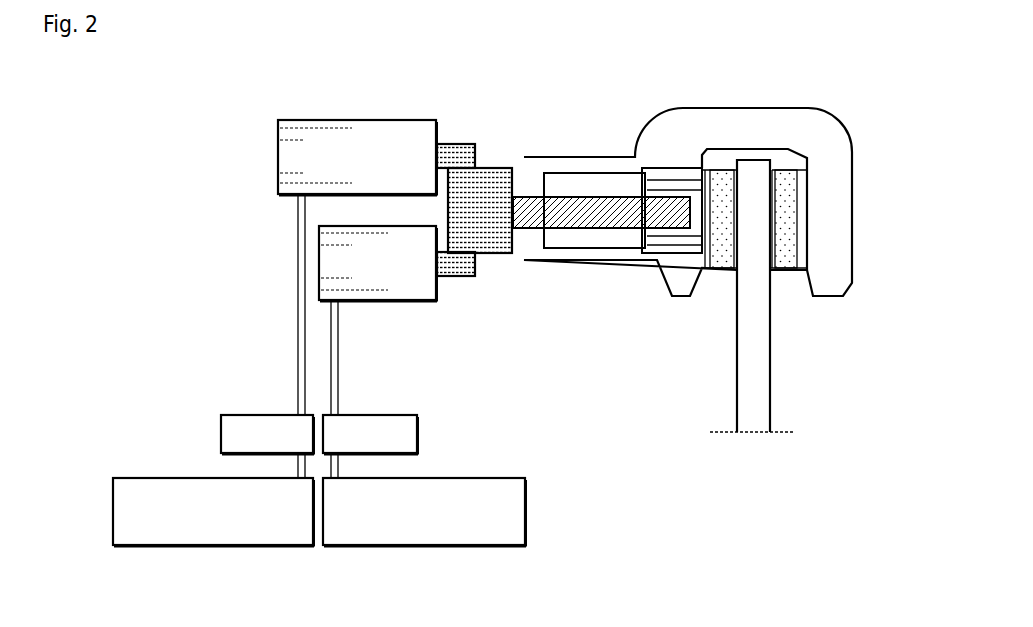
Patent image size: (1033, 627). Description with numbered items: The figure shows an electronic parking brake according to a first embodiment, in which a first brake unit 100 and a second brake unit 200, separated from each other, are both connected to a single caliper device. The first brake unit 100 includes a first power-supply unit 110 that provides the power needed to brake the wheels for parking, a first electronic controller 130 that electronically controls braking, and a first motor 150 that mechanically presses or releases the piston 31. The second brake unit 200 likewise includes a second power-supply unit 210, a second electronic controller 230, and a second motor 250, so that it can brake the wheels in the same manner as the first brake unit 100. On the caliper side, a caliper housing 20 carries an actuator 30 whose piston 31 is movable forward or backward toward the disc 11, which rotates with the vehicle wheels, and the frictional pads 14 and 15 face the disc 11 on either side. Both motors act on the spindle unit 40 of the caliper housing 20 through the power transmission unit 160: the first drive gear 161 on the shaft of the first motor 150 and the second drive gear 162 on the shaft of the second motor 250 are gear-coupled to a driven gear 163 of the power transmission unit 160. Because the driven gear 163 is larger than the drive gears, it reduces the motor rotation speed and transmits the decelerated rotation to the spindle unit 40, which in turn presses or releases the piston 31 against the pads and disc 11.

The disc 11 is at (770, 353).
The frictional pad 14 is at (787, 269).
The frictional pad 15 is at (715, 269).
The caliper housing 20 is at (773, 110).
The actuator 30 is at (678, 160).
The piston 31 is at (688, 190).
The spindle unit 40 is at (568, 197).
The first brake unit 100 is at (246, 339).
The first power-supply unit 110 is at (313, 558).
The first electronic controller 130 is at (221, 431).
The first motor 150 is at (340, 118).
The power transmission unit 160 is at (482, 203).
The first drive gear 161 is at (457, 143).
The second drive gear 162 is at (462, 277).
The driven gear 163 is at (502, 254).
The second brake unit 200 is at (451, 412).
The second power-supply unit 210 is at (323, 558).
The second electronic controller 230 is at (418, 432).
The second motor 250 is at (391, 301).